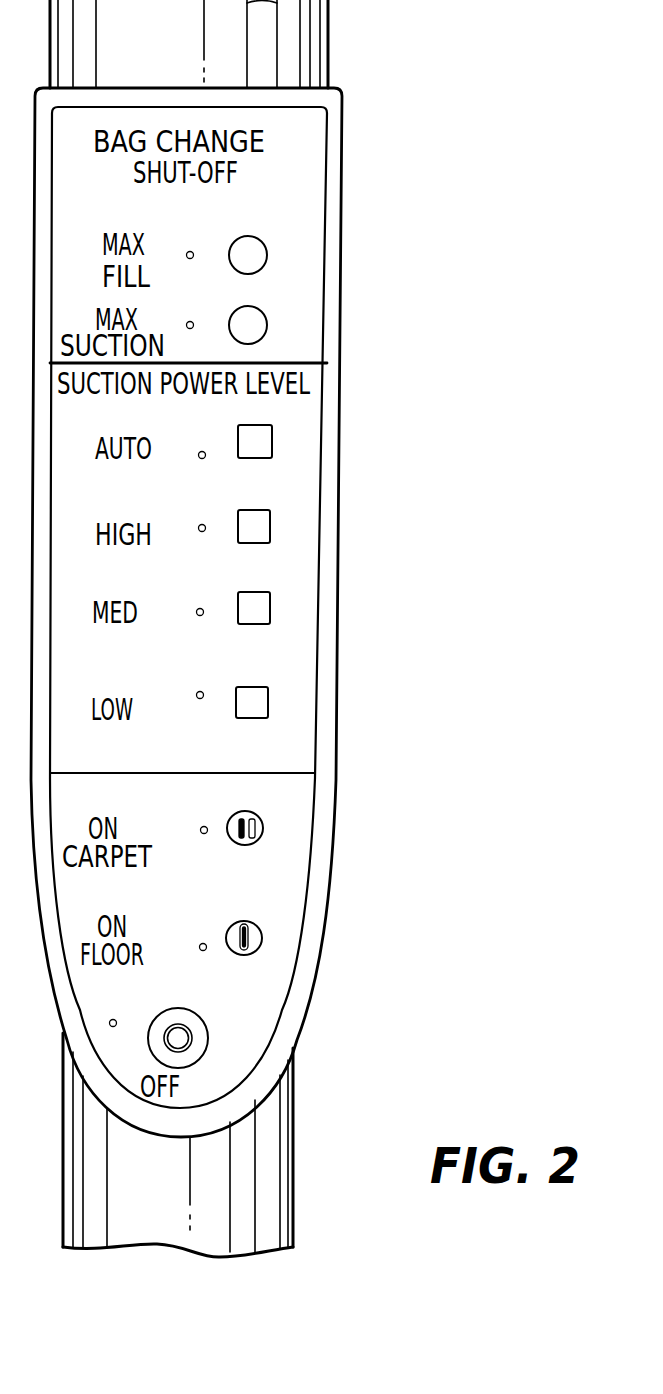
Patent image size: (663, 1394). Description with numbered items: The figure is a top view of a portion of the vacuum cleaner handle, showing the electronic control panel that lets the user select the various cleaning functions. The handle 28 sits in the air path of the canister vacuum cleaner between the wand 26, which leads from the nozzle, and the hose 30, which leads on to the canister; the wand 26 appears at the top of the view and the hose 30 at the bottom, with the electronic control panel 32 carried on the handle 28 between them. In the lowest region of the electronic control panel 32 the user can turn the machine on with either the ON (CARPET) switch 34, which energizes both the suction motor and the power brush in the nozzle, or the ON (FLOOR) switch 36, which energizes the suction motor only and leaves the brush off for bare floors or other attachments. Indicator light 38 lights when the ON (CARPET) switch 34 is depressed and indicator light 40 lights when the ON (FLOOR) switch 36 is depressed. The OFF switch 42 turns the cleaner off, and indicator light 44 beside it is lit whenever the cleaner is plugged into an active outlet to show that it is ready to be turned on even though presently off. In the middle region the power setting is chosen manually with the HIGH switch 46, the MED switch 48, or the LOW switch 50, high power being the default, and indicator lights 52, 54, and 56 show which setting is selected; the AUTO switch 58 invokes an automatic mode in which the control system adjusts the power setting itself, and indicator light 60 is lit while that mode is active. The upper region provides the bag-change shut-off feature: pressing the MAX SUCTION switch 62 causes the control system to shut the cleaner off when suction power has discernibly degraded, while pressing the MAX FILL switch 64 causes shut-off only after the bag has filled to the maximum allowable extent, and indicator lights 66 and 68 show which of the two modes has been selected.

The wand 26 is at (327, 58).
The handle 28 is at (338, 703).
The hose 30 is at (295, 1175).
The electronic control panel 32 is at (322, 506).
The ON (CARPET) switch 34 is at (263, 829).
The ON (FLOOR) switch 36 is at (262, 942).
The indicator light 38 is at (205, 826).
The indicator light 40 is at (205, 944).
The OFF switch 42 is at (208, 1032).
The indicator light 44 is at (116, 1021).
The HIGH switch 46 is at (270, 530).
The MED switch 48 is at (255, 624).
The LOW switch 50 is at (252, 718).
The indicator light 52 is at (205, 530).
The indicator light 54 is at (203, 614).
The indicator light 56 is at (203, 697).
The AUTO switch 58 is at (258, 458).
The indicator light 60 is at (204, 458).
The MAX SUCTION switch 62 is at (267, 326).
The MAX FILL switch 64 is at (267, 257).
The indicator light 66 is at (193, 322).
The indicator light 68 is at (193, 252).